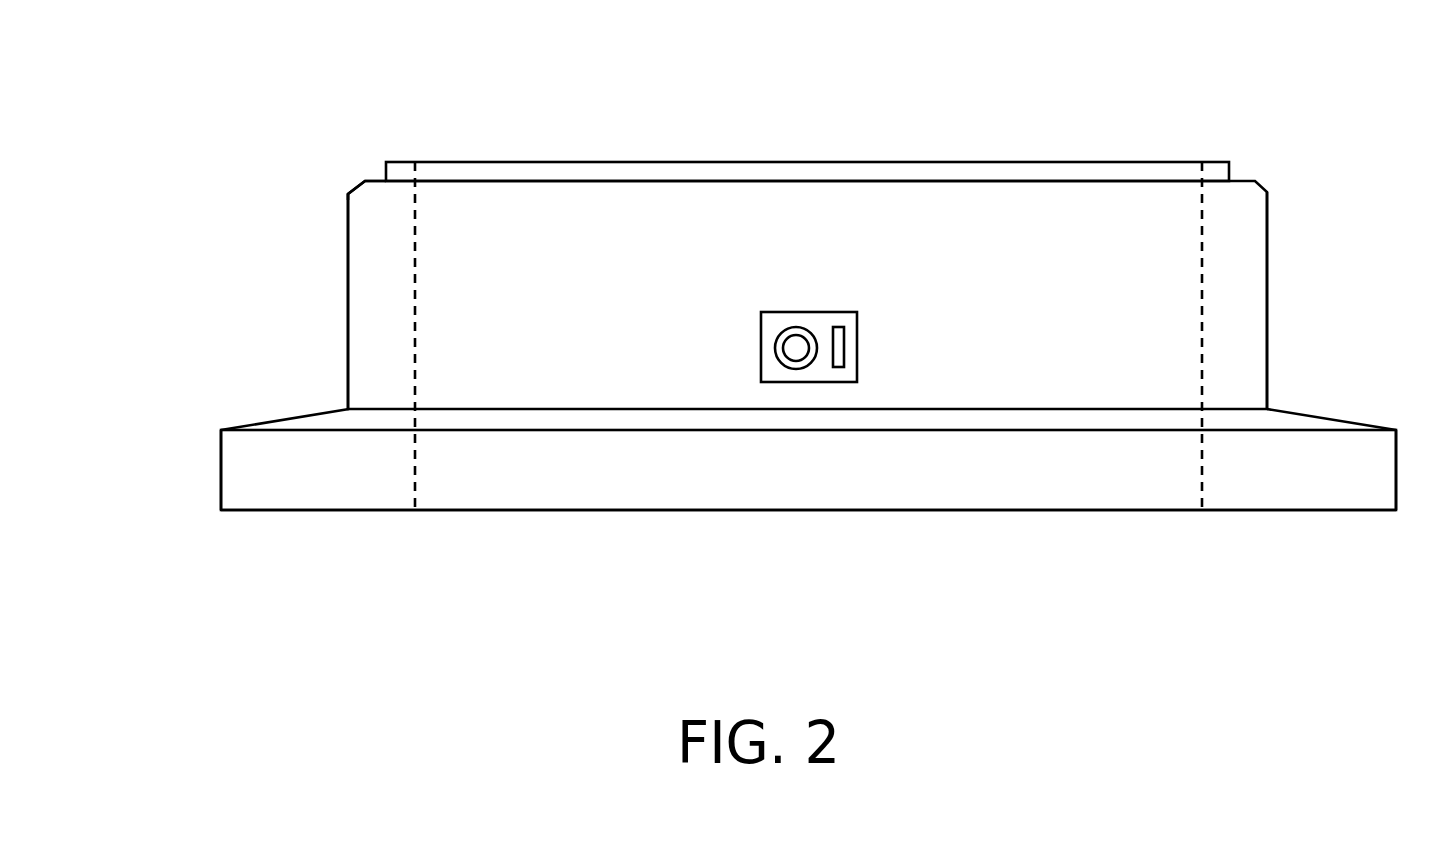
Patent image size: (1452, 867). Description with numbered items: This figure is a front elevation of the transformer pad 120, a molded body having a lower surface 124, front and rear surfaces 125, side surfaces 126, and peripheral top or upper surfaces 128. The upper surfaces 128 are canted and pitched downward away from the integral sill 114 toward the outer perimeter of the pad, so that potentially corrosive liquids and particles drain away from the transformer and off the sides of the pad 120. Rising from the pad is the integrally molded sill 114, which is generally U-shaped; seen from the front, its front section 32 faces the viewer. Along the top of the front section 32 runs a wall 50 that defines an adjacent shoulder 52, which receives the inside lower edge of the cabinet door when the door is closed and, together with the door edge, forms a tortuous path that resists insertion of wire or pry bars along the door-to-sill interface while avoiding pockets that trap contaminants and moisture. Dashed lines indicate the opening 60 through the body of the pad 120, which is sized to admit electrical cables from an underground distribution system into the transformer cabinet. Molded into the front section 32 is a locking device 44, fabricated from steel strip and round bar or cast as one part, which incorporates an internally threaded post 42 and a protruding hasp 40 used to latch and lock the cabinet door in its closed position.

The front section 32 is at (1085, 207).
The protruding hasp 40 is at (839, 370).
The internally threaded post 42 is at (793, 365).
The locking device 44 is at (808, 312).
The wall 50 is at (548, 162).
The shoulder 52 is at (358, 181).
The opening 60 is at (415, 473).
The sill 114 is at (348, 265).
The transformer pad 120 is at (1270, 283).
The lower surface 124 is at (1291, 509).
The front and rear surfaces 125 is at (633, 483).
The side surfaces 126 is at (221, 471).
The peripheral top or upper surfaces 128 is at (280, 413).